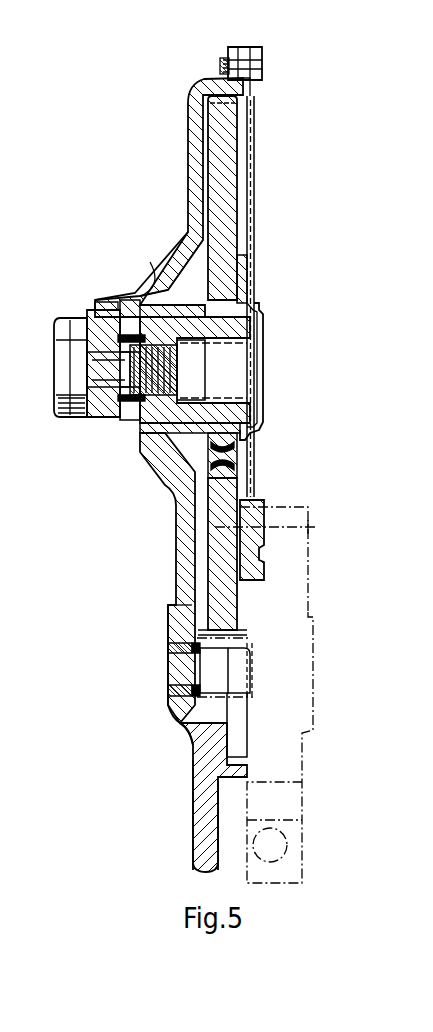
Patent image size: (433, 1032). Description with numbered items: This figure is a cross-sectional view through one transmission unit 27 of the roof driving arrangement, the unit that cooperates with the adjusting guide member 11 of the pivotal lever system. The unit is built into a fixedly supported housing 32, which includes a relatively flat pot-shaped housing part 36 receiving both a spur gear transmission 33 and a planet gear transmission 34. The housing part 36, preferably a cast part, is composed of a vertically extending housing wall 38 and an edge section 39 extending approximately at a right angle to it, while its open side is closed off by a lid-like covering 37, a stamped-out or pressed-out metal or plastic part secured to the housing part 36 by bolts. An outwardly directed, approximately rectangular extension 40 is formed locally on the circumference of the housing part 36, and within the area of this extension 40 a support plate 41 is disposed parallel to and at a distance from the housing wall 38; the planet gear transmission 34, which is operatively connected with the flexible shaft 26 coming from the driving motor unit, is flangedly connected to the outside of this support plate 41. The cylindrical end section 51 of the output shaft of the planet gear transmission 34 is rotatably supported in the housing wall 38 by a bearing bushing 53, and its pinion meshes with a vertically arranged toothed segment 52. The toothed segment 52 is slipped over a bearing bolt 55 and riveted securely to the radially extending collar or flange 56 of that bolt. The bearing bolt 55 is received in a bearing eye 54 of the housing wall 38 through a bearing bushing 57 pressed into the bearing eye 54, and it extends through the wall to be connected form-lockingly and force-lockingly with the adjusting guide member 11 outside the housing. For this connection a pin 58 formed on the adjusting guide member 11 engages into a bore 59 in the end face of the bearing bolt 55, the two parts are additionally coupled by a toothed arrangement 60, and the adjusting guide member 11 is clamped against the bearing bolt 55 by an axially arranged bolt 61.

The edge section 39 is at (218, 78).
The pot-shaped housing part 36 is at (240, 100).
The housing wall 38 is at (190, 210).
The lid-like covering 37 is at (255, 203).
The bearing bushing 57 is at (152, 282).
The bore 59 is at (140, 304).
The pin 58 is at (112, 312).
The axially arranged bolt 61 is at (49, 324).
The collar or flange 56 is at (243, 272).
The bearing bolt 55 is at (251, 304).
The adjusting guide member 11 is at (100, 412).
The toothed arrangement 60 is at (115, 436).
The bearing eye 54 is at (150, 463).
The transmission unit 27 is at (297, 494).
The support plate 41 is at (265, 546).
The planet gear transmission 34 is at (320, 608).
The toothed segment 52 is at (200, 618).
The spur gear transmission 33 is at (238, 628).
The cylindrical end section 51 is at (170, 651).
The bearing bushing 53 is at (170, 690).
The extension 40 is at (191, 780).
The housing 32 is at (186, 817).
The flexible shaft 26 is at (285, 847).